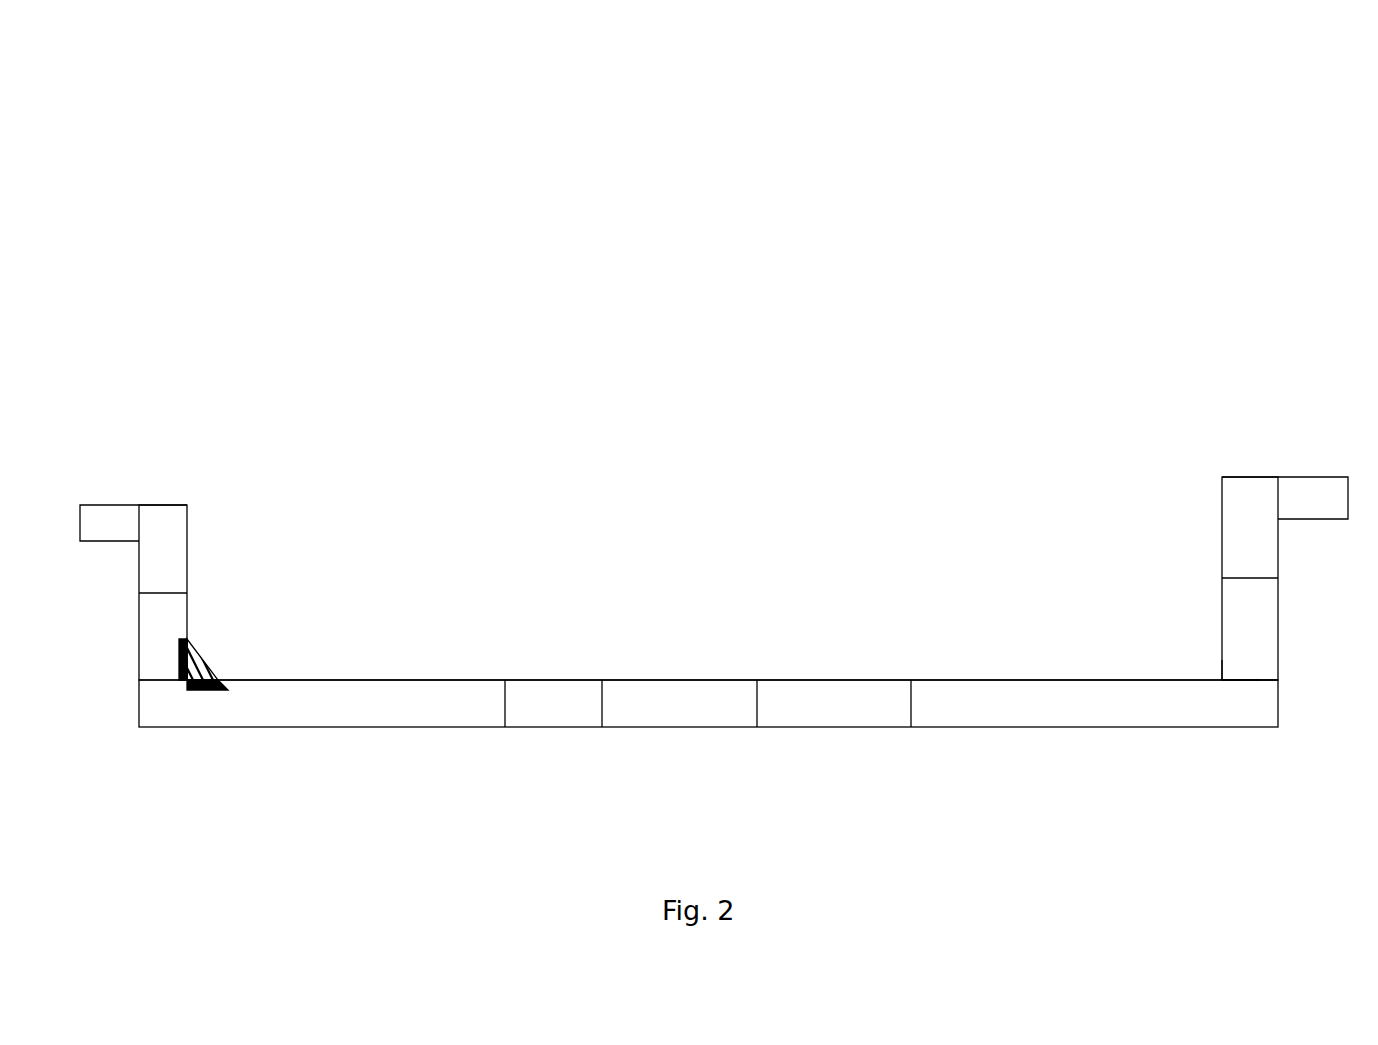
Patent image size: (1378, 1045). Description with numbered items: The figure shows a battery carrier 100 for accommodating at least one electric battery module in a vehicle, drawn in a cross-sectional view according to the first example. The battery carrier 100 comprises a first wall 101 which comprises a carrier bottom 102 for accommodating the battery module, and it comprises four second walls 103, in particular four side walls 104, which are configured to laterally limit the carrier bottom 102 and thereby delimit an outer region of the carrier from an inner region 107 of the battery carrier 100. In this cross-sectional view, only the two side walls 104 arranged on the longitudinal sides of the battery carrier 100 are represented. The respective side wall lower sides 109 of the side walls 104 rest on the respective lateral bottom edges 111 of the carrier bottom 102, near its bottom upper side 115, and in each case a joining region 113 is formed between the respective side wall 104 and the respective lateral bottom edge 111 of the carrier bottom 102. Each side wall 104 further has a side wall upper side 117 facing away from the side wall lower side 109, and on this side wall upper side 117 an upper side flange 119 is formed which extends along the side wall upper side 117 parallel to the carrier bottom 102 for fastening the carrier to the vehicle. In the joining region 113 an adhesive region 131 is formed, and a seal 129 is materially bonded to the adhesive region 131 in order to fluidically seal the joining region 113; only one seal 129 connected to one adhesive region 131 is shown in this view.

The battery carrier 100 is at (242, 137).
The first wall 101 is at (708, 637).
The carrier bottom 102 is at (868, 697).
The second walls 103 is at (708, 578).
The side walls 104 is at (187, 518).
The inner region 107 is at (882, 533).
The side wall lower side 109 is at (1250, 680).
The lateral bottom edge 111 is at (1235, 682).
The joining region 113 is at (187, 680).
The bottom upper side 115 is at (558, 680).
The side wall upper side 117 is at (165, 505).
The upper side flange 119 is at (120, 515).
The seal 129 is at (207, 658).
The adhesive region 131 is at (178, 648).